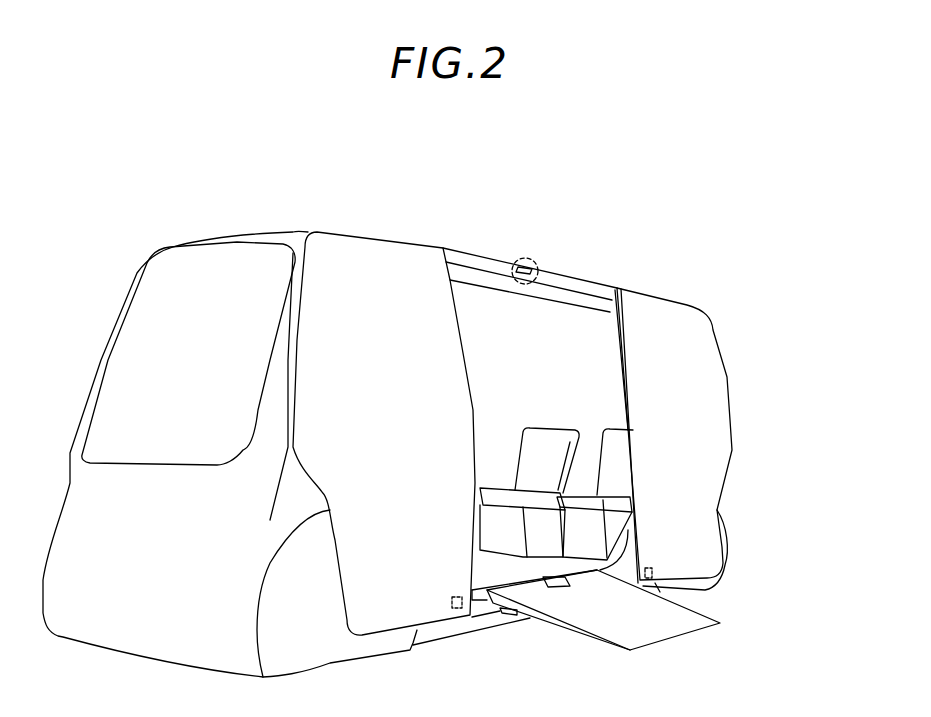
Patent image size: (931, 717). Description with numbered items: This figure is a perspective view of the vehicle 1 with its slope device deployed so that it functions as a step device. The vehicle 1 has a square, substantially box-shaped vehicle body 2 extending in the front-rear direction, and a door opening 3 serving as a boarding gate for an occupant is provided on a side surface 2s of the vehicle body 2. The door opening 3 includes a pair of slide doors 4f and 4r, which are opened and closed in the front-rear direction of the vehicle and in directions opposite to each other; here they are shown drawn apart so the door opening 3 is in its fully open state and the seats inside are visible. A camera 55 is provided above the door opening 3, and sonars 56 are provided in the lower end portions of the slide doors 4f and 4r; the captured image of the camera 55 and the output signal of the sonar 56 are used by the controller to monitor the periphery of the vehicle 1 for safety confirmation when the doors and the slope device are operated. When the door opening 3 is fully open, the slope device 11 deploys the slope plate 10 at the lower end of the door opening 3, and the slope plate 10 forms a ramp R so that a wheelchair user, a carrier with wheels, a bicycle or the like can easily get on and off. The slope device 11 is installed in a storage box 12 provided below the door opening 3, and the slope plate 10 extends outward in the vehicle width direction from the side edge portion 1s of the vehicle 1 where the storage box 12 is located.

The vehicle 1 is at (448, 417).
The vehicle body 2 is at (385, 454).
The side surface 2s is at (283, 513).
The door opening 3 is at (566, 303).
The slide door 4f is at (378, 235).
The slide door 4r is at (650, 293).
The camera 55 is at (523, 253).
The sonar 56 is at (450, 596).
The slope plate 10 is at (672, 610).
The ramp R is at (670, 613).
The slope device 11 is at (672, 632).
The storage box 12 is at (513, 610).
The side edge portion 1s is at (477, 618).